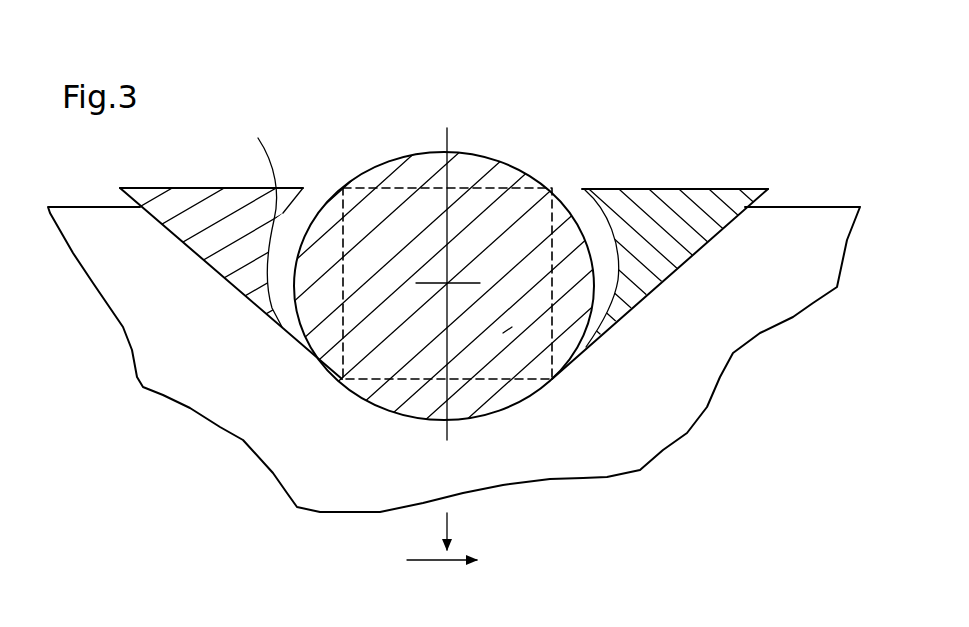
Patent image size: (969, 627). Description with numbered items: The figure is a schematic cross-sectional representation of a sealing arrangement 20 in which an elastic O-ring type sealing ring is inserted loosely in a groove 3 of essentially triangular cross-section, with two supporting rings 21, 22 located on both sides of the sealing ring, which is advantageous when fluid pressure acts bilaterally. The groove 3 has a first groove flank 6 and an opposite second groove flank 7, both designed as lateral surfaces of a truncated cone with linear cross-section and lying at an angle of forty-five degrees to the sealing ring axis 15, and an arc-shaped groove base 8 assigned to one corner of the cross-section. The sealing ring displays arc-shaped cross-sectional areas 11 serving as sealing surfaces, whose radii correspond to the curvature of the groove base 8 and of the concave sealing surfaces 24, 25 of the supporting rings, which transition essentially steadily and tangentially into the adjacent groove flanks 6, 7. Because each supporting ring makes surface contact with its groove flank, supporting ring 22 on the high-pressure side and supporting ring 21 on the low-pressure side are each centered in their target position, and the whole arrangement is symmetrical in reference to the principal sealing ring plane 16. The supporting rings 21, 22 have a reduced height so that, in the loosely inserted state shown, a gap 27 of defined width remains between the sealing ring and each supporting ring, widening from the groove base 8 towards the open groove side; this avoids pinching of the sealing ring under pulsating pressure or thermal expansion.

The groove 3 is at (318, 172).
The sealing arrangement 20 is at (566, 170).
The supporting ring 22 is at (242, 202).
The supporting ring 21 is at (675, 202).
The gap 27 is at (660, 122).
The sealing surface 25 is at (283, 280).
The sealing surface 24 is at (606, 261).
The second groove flank 7 is at (270, 330).
The first groove flank 6 is at (630, 320).
The groove base 8 is at (427, 430).
The arc-shaped cross-sectional areas 11 is at (512, 327).
The principal sealing ring plane 16 is at (466, 531).
The sealing ring axis 15 is at (416, 562).